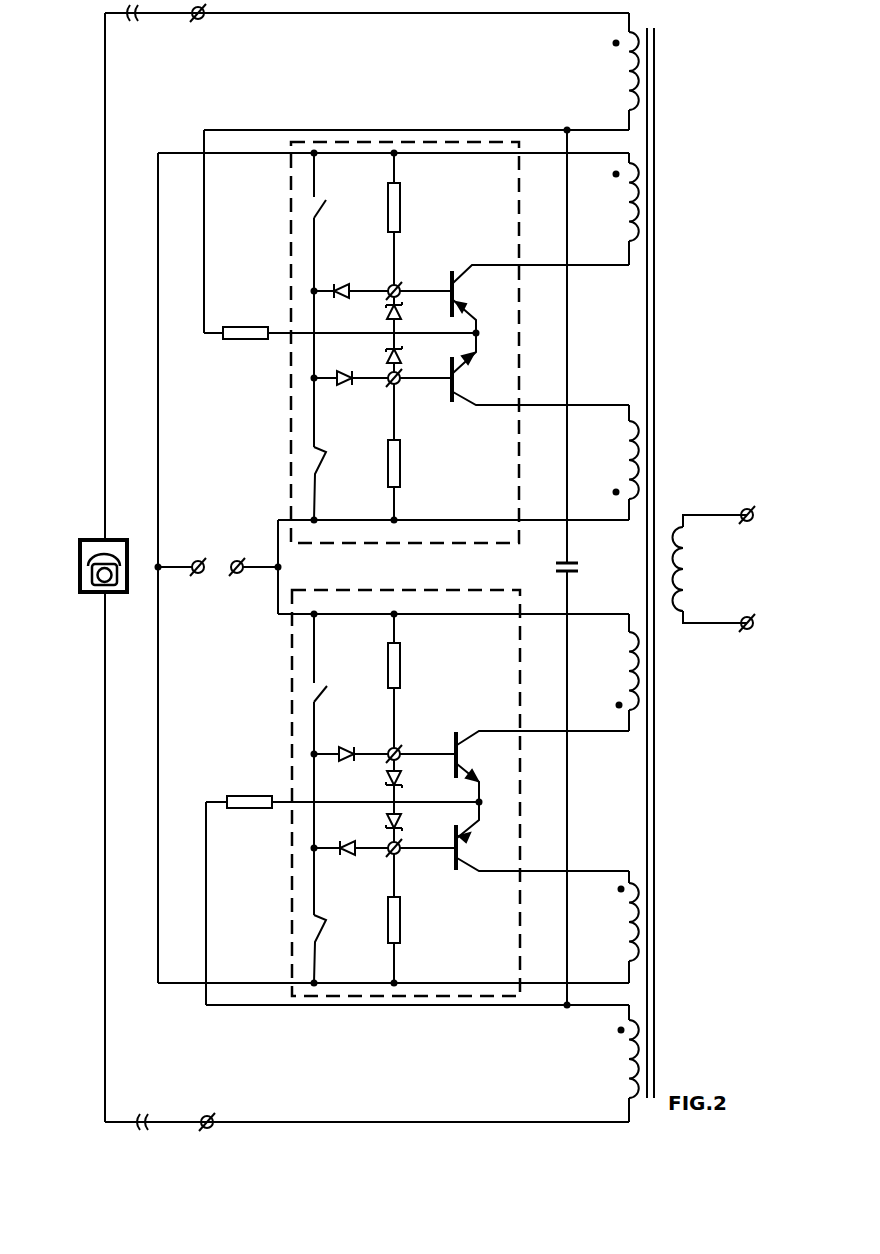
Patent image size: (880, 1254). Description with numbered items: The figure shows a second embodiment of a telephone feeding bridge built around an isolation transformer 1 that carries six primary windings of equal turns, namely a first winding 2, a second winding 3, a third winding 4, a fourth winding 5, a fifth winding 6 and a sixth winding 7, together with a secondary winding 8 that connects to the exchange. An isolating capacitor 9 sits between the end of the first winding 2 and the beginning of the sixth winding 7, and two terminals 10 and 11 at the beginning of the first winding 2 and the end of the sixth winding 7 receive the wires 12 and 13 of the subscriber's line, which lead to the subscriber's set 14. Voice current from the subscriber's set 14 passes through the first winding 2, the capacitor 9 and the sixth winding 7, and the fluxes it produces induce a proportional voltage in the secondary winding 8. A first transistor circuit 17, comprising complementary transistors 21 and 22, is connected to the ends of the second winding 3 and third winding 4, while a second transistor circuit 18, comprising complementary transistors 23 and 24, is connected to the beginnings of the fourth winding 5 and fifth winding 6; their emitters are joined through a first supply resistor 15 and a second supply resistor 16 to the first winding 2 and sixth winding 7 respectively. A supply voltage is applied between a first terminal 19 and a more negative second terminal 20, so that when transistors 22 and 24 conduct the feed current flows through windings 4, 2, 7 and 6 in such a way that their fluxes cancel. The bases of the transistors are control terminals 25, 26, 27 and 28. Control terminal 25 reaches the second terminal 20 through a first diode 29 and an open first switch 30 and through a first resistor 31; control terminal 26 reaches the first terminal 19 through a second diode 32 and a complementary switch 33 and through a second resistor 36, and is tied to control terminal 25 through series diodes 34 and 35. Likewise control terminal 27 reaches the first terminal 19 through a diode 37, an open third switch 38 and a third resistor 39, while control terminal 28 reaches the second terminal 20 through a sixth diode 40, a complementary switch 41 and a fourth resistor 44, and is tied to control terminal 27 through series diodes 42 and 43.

The isolation transformer 1 is at (650, 30).
The first winding 2 is at (632, 76).
The second winding 3 is at (632, 210).
The third winding 4 is at (633, 443).
The fourth winding 5 is at (632, 672).
The fifth winding 6 is at (634, 906).
The sixth winding 7 is at (634, 1062).
The secondary winding 8 is at (686, 568).
The isolating capacitor 9 is at (573, 562).
The terminal 10 is at (204, 17).
The terminal 11 is at (204, 1118).
The wire 12 is at (106, 292).
The wire 13 is at (106, 829).
The subscriber's set 14 is at (128, 584).
The first supply resistor 15 is at (245, 326).
The second supply resistor 16 is at (257, 810).
The first transistor circuit 17 is at (433, 142).
The second transistor circuit 18 is at (480, 997).
The first terminal 19 is at (237, 580).
The second terminal 20 is at (202, 577).
The transistor 21 is at (450, 310).
The transistor 22 is at (451, 394).
The transistor 23 is at (457, 776).
The transistor 24 is at (457, 834).
The control terminal 25 is at (401, 286).
The control terminal 26 is at (391, 386).
The control terminal 27 is at (401, 748).
The control terminal 28 is at (398, 856).
The first diode 29 is at (337, 284).
The first switch 30 is at (327, 204).
The first resistor 31 is at (401, 214).
The second diode 32 is at (341, 386).
The switch 33 is at (324, 460).
The third diode 34 is at (384, 352).
The fourth diode 35 is at (386, 312).
The second resistor 36 is at (401, 467).
The diode 37 is at (347, 746).
The third switch 38 is at (328, 690).
The third resistor 39 is at (401, 668).
The sixth diode 40 is at (342, 856).
The switch 41 is at (324, 936).
The seventh diode 42 is at (384, 781).
The eighth diode 43 is at (384, 823).
The fourth resistor 44 is at (401, 920).